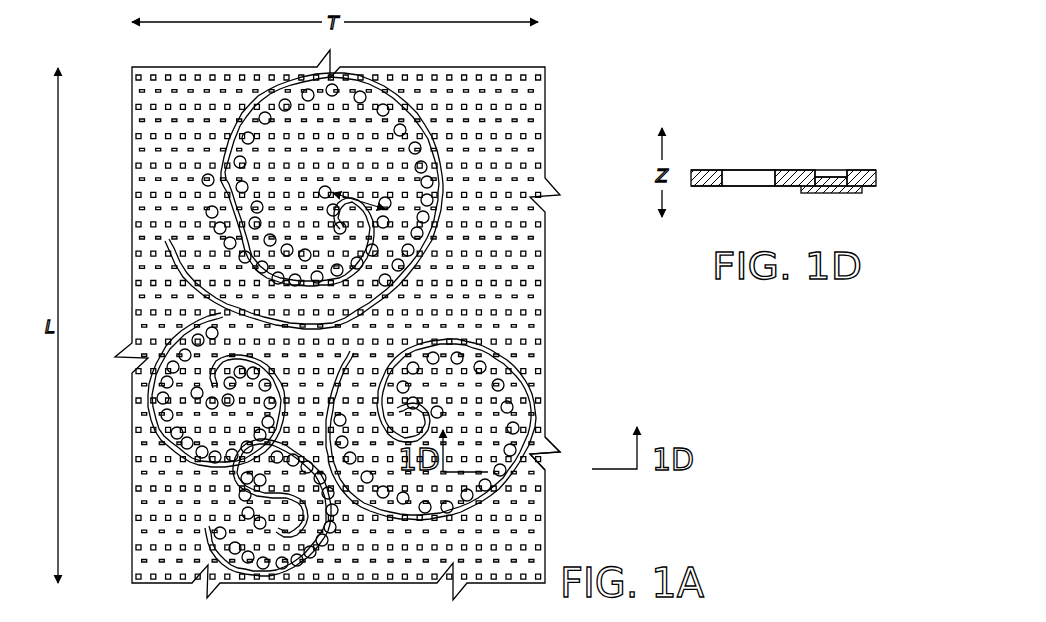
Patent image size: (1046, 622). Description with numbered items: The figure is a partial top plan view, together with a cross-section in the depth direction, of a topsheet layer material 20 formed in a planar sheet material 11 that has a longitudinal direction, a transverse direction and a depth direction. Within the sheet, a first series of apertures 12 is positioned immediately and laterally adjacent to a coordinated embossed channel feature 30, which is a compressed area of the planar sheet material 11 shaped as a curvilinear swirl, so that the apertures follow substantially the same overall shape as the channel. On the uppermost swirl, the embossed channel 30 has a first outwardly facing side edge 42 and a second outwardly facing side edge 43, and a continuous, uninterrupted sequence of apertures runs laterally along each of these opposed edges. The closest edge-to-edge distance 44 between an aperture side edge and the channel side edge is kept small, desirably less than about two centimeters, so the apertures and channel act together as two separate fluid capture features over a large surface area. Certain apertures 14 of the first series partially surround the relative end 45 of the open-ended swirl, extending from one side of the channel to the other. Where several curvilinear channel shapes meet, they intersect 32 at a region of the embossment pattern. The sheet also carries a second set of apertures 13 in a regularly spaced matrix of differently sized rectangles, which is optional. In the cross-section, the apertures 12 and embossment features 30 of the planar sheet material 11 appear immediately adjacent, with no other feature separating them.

In FIG. 1A, the planar sheet material 11 is at (547, 452).
In FIG. 1D, the planar sheet material 11 is at (706, 168).
In FIG. 1A, the first series of apertures 12 is at (432, 178).
In FIG. 1D, the first series of apertures 12 is at (750, 178).
In FIG. 1A, the second set of apertures 13 is at (532, 107).
In FIG. 1A, the apertures 14 is at (197, 393).
In FIG. 1A, the topsheet layer material 20 is at (582, 320).
In FIG. 1A, the embossed channel feature 30 is at (108, 315).
In FIG. 1D, the embossed channel feature 30 is at (830, 174).
In FIG. 1A, the intersection 32 is at (422, 272).
In FIG. 1A, the first outwardly facing side edge 42 is at (302, 262).
In FIG. 1D, the first outwardly facing side edge 42 is at (848, 168).
In FIG. 1A, the second outwardly facing side edge 43 is at (282, 283).
In FIG. 1D, the second outwardly facing side edge 43 is at (819, 189).
In FIG. 1A, the closest edge-to-edge distance 44 is at (372, 190).
In FIG. 1D, the closest edge-to-edge distance 44 is at (815, 161).
In FIG. 1A, the end of the embossed channel feature 45 is at (213, 387).